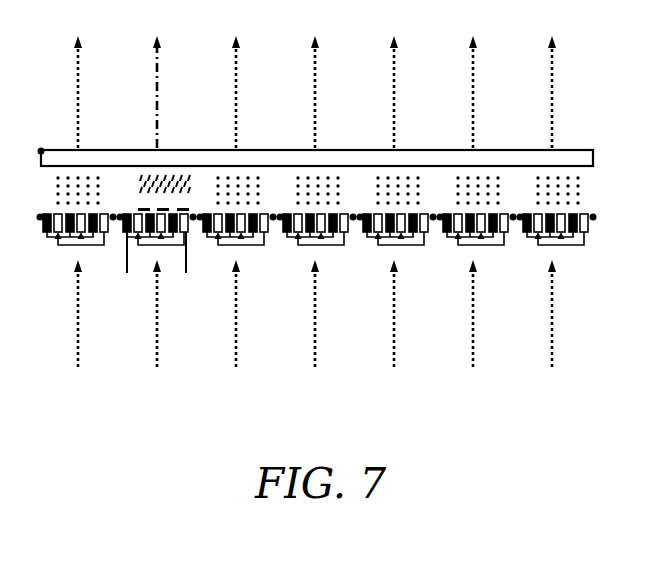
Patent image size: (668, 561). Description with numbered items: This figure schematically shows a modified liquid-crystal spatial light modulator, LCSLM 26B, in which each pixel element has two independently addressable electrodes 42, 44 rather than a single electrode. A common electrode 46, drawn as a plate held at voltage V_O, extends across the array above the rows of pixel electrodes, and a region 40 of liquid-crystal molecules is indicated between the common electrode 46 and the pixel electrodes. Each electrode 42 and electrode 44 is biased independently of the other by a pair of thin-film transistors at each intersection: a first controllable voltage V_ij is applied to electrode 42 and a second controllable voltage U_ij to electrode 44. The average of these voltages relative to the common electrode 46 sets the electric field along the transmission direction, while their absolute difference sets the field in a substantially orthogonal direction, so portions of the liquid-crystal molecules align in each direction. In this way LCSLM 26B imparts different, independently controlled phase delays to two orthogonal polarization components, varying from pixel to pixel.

The modified LCSLM 26B is at (349, 201).
The modulated beam region 40 is at (200, 186).
The first independently addressable electrode 42 is at (122, 238).
The second independently addressable electrode 44 is at (196, 234).
The common electrode 46 is at (416, 150).